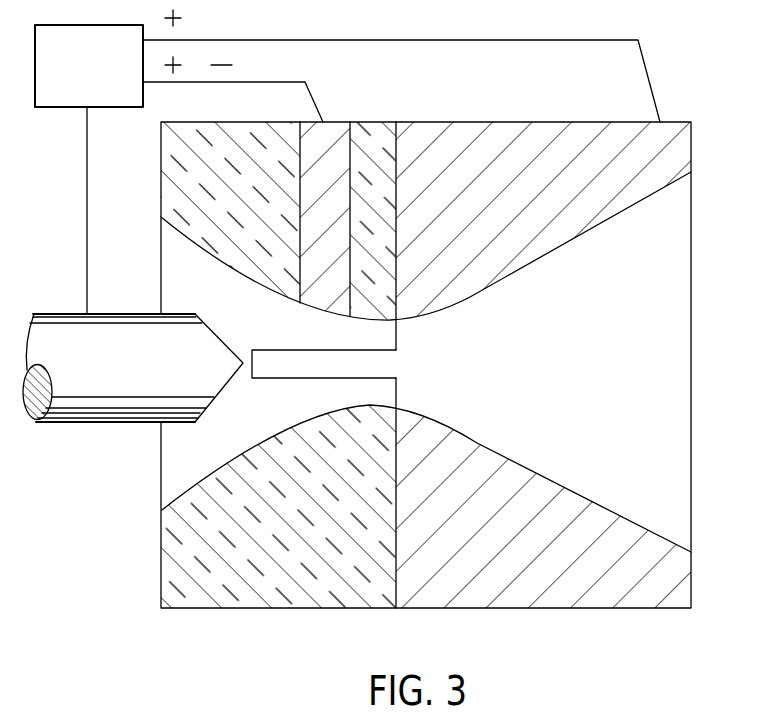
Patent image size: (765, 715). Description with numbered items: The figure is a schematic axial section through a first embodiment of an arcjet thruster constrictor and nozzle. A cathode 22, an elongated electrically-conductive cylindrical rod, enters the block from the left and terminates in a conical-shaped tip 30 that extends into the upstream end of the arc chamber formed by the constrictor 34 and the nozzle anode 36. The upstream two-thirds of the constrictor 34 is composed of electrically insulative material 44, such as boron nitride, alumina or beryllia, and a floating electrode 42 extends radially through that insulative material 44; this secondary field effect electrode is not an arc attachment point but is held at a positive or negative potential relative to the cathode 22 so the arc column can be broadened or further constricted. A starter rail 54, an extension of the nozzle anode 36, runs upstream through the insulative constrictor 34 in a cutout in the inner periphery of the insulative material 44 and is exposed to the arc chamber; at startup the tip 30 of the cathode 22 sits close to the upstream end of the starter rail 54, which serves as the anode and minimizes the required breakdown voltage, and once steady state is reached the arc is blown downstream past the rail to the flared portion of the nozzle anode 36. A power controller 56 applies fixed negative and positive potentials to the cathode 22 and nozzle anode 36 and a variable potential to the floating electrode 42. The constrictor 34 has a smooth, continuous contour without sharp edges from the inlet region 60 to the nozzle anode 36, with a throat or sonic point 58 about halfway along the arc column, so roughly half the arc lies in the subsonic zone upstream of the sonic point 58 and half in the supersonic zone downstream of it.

The cathode 22 is at (58, 313).
The conical-shaped tip 30 is at (219, 392).
The constrictor 34 is at (340, 423).
The nozzle anode 36 is at (667, 535).
The floating electrode 42 is at (335, 122).
The insulative material 44 is at (370, 122).
The starter rail 54 is at (291, 380).
The power controller 56 is at (60, 108).
The sonic point 58 is at (383, 322).
The inlet region 60 is at (160, 485).